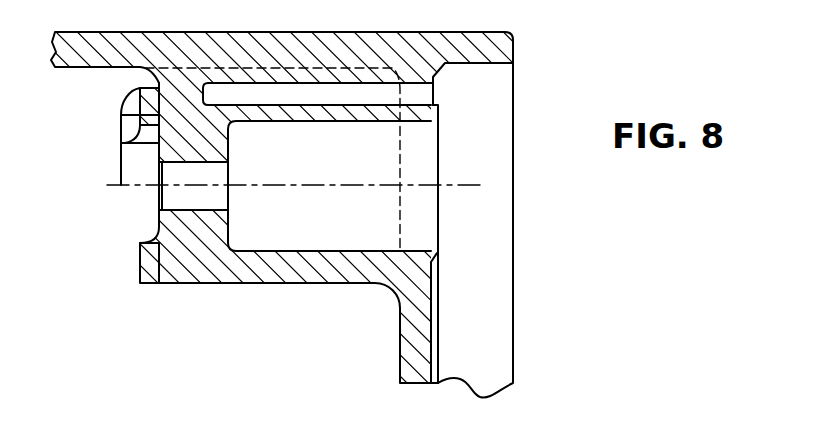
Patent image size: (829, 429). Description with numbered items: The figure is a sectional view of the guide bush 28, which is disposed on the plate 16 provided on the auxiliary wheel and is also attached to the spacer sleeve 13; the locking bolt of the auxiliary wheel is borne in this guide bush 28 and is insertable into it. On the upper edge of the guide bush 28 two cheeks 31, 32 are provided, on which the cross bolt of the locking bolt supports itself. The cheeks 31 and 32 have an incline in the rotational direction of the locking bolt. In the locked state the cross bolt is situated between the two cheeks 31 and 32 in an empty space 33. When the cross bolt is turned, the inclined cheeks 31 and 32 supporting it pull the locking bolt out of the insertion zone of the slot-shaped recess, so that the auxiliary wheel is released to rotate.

The spacer sleeve 13 is at (274, 38).
The plate 16 is at (410, 343).
The guide bush 28 is at (238, 287).
The cheek 31 is at (122, 120).
The cheek 32 is at (140, 258).
The empty space 33 is at (160, 213).